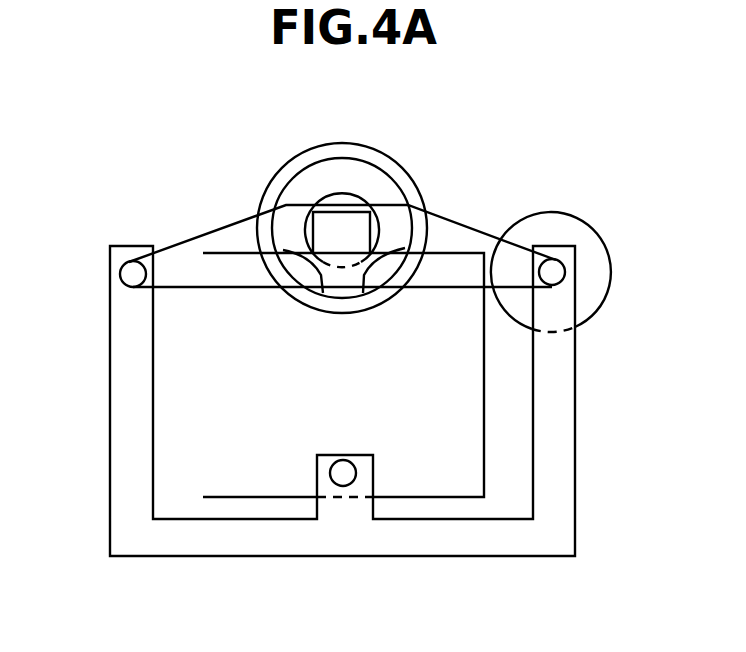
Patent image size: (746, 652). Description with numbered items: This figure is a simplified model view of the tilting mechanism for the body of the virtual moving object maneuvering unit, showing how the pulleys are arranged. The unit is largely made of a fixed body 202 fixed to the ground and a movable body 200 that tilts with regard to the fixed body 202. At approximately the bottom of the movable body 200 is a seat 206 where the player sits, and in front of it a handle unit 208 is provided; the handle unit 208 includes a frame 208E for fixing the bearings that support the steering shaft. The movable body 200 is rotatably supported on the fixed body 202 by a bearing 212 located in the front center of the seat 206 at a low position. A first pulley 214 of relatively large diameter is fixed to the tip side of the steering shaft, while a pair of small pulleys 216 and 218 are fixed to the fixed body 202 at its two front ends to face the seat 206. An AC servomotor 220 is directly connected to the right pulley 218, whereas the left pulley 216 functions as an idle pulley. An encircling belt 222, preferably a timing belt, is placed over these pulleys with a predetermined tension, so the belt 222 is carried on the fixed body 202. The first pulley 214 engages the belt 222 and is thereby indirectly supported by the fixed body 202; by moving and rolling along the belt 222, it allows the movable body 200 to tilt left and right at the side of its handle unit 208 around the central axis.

The movable body 200 is at (252, 375).
The fixed body 202 is at (110, 500).
The seat 206 is at (203, 432).
The handle unit 208 is at (290, 162).
The frame 208E is at (313, 223).
The bearing 212 is at (345, 487).
The first pulley 214 is at (352, 194).
The left pulley 216 is at (125, 262).
The right pulley 218 is at (565, 271).
The AC servomotor 220 is at (598, 228).
The encircling belt 222 is at (473, 229).